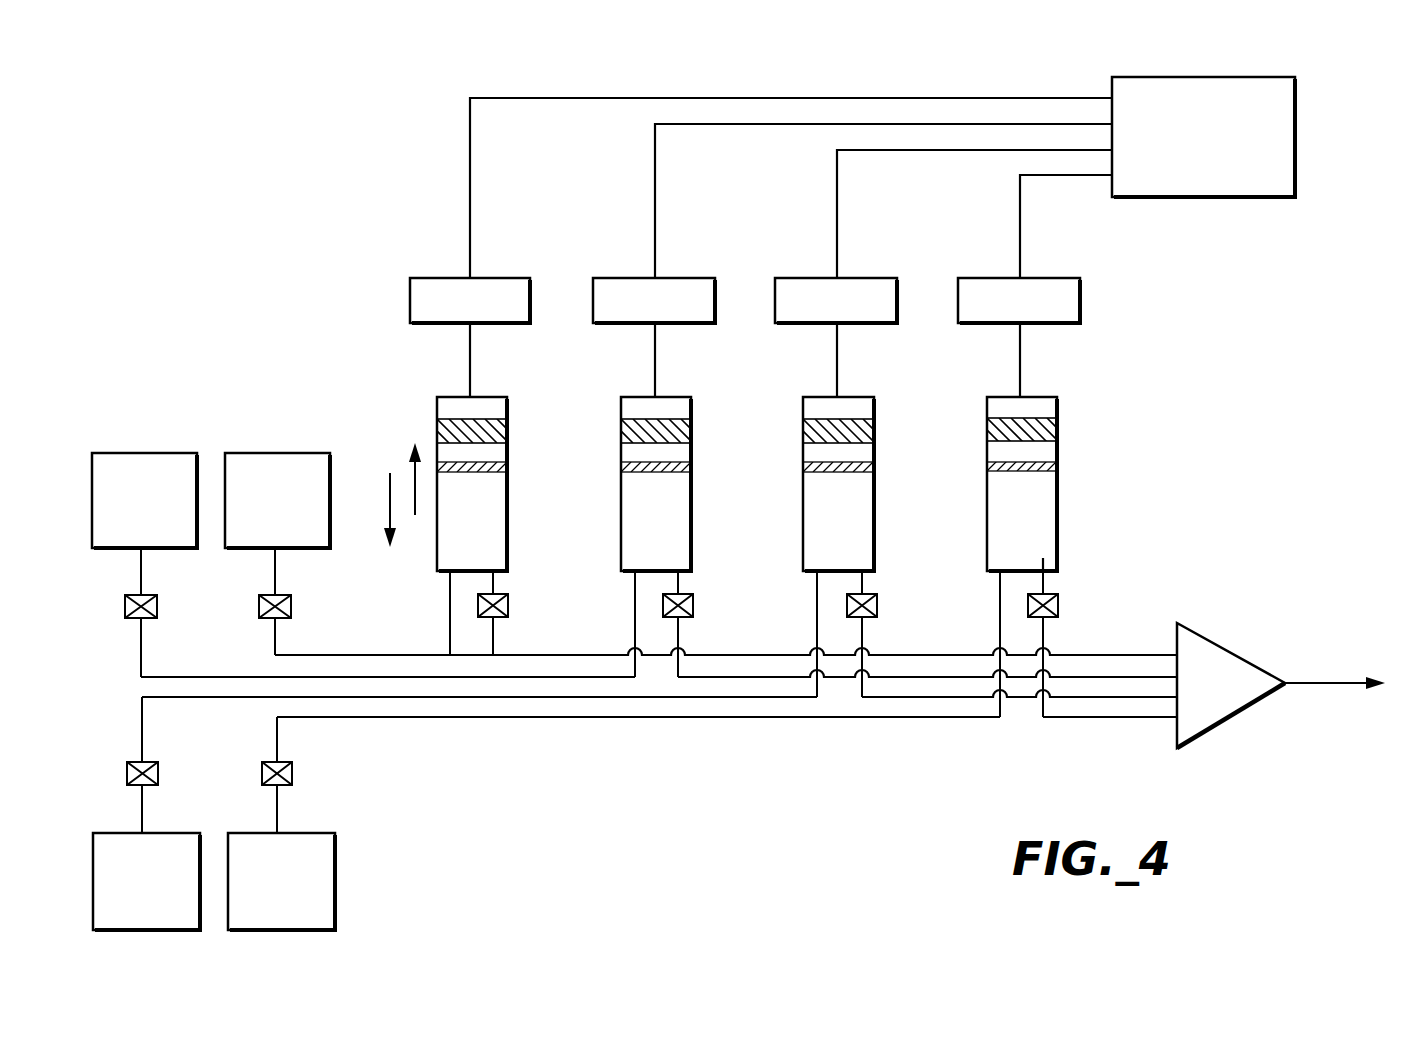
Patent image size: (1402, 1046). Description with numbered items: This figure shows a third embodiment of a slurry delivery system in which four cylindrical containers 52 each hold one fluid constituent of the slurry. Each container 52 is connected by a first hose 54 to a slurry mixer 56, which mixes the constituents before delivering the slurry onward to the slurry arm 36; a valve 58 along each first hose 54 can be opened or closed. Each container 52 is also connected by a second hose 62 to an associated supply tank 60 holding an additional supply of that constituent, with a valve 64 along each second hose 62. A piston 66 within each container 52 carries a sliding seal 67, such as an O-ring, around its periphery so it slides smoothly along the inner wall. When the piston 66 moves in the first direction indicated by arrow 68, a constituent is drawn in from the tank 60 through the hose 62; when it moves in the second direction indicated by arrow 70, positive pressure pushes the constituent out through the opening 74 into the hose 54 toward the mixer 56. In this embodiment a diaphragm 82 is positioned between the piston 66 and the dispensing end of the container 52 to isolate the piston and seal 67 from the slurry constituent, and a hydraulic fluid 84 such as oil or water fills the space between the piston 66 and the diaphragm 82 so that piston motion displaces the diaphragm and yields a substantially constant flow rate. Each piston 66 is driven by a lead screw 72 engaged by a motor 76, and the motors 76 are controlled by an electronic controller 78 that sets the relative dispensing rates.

The electronic controller 78 is at (1218, 77).
The motor 76 is at (497, 278).
The lead screw 72 is at (1022, 372).
The cylindrical container 52 is at (507, 512).
The piston 66 is at (1045, 418).
The sliding seal 67 is at (1040, 428).
The hydraulic fluid 84 is at (1045, 452).
The diaphragm 82 is at (1045, 467).
The opening 74 is at (1050, 565).
The arrow 68 is at (412, 476).
The arrow 70 is at (388, 510).
The supply tank 60 is at (213, 691).
The valve 64 is at (293, 773).
The valve 58 is at (1058, 605).
The second hose 62 is at (470, 718).
The first hose 54 is at (1118, 718).
The slurry mixer 56 is at (1222, 648).
The slurry arm 36 is at (1335, 737).